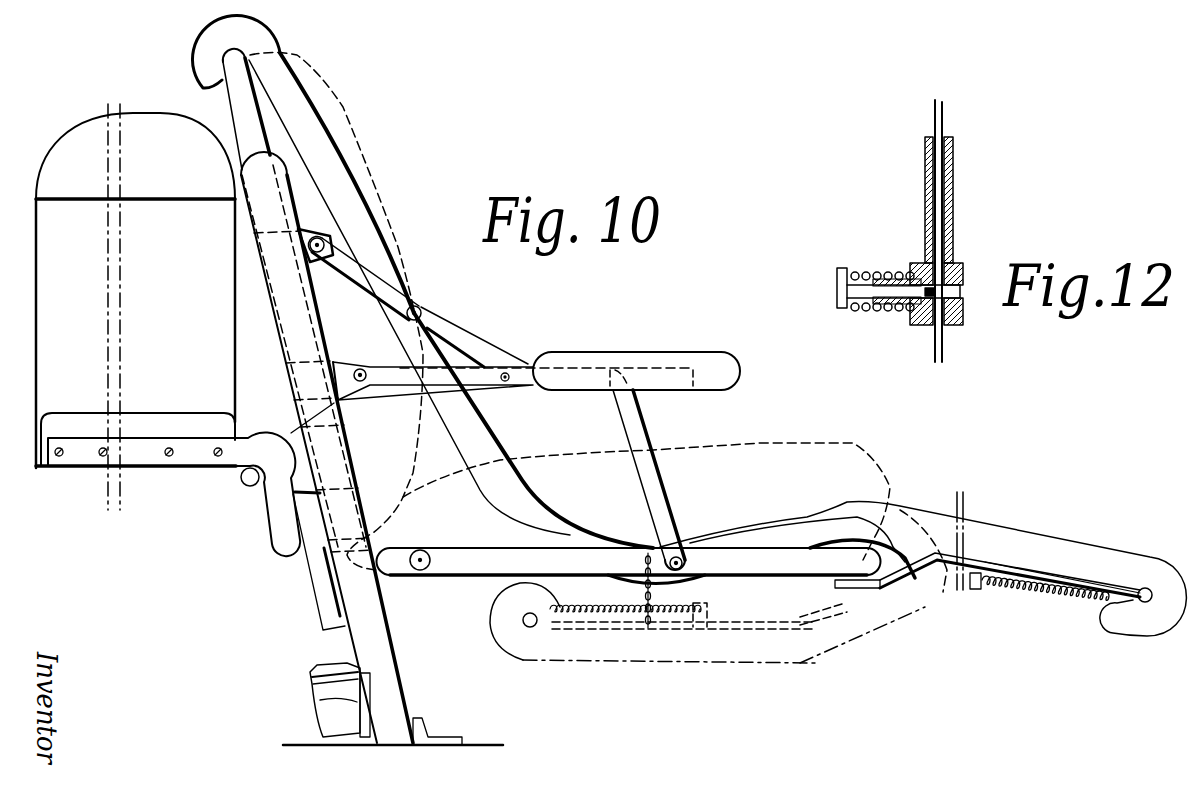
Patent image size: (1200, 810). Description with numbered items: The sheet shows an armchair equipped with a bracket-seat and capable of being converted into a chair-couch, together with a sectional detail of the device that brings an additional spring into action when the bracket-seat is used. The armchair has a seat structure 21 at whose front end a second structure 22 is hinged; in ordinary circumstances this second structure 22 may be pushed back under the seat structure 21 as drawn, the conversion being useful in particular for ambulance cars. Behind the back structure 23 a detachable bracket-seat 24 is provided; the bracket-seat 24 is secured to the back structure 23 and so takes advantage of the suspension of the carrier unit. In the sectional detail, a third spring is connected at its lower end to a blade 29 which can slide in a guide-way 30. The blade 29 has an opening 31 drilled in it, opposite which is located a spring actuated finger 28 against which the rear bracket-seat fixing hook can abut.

In FIG. 10, the seat structure 21 is at (772, 558).
In FIG. 10, the second structure 22 is at (1020, 573).
In FIG. 10, the back structure 23 is at (293, 313).
In FIG. 10, the bracket-seat 24 is at (80, 404).
In FIG. 12, the spring actuated finger 28 is at (845, 287).
In FIG. 12, the blade 29 is at (942, 343).
In FIG. 12, the guide-way 30 is at (953, 192).
In FIG. 12, the opening 31 is at (962, 264).